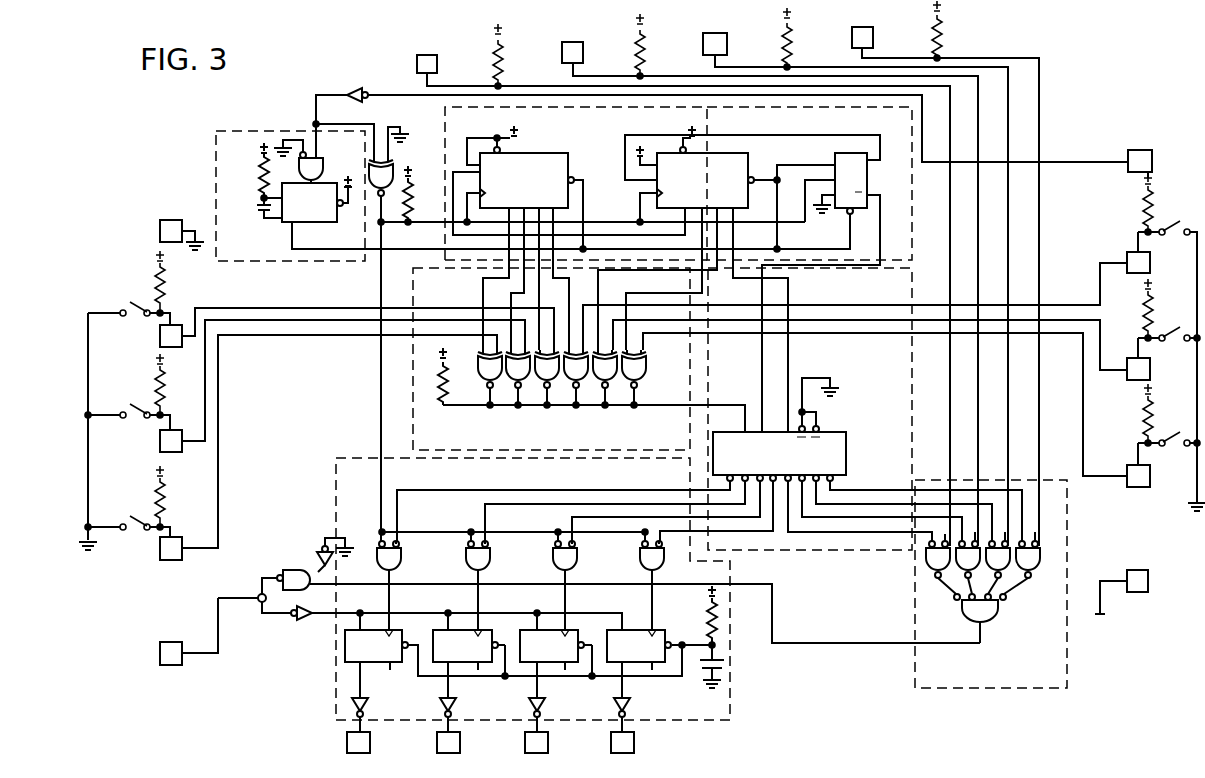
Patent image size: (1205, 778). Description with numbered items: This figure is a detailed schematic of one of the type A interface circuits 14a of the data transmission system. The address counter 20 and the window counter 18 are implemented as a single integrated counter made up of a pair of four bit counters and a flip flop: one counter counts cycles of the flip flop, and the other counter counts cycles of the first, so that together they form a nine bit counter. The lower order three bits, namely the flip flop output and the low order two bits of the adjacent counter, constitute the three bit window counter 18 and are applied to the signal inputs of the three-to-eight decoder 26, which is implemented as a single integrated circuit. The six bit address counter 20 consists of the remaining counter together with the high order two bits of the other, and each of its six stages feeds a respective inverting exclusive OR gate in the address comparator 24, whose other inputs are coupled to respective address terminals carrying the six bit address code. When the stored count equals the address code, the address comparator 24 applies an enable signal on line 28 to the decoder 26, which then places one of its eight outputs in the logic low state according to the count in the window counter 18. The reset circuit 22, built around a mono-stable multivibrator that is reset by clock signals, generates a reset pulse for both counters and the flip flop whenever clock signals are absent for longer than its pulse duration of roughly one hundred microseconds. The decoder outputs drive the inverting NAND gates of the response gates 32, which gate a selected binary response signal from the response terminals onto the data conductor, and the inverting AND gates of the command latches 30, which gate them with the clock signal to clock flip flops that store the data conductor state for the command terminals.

The type A interface circuit 14a is at (1077, 727).
The window counter 18 is at (912, 215).
The address counter 20 is at (445, 115).
The reset circuit 22 is at (216, 159).
The address comparator 24 is at (413, 365).
The 3-to-8 decoder 26 is at (912, 400).
The line 28 is at (673, 405).
The command latches 30 is at (733, 658).
The response gates 32 is at (912, 658).